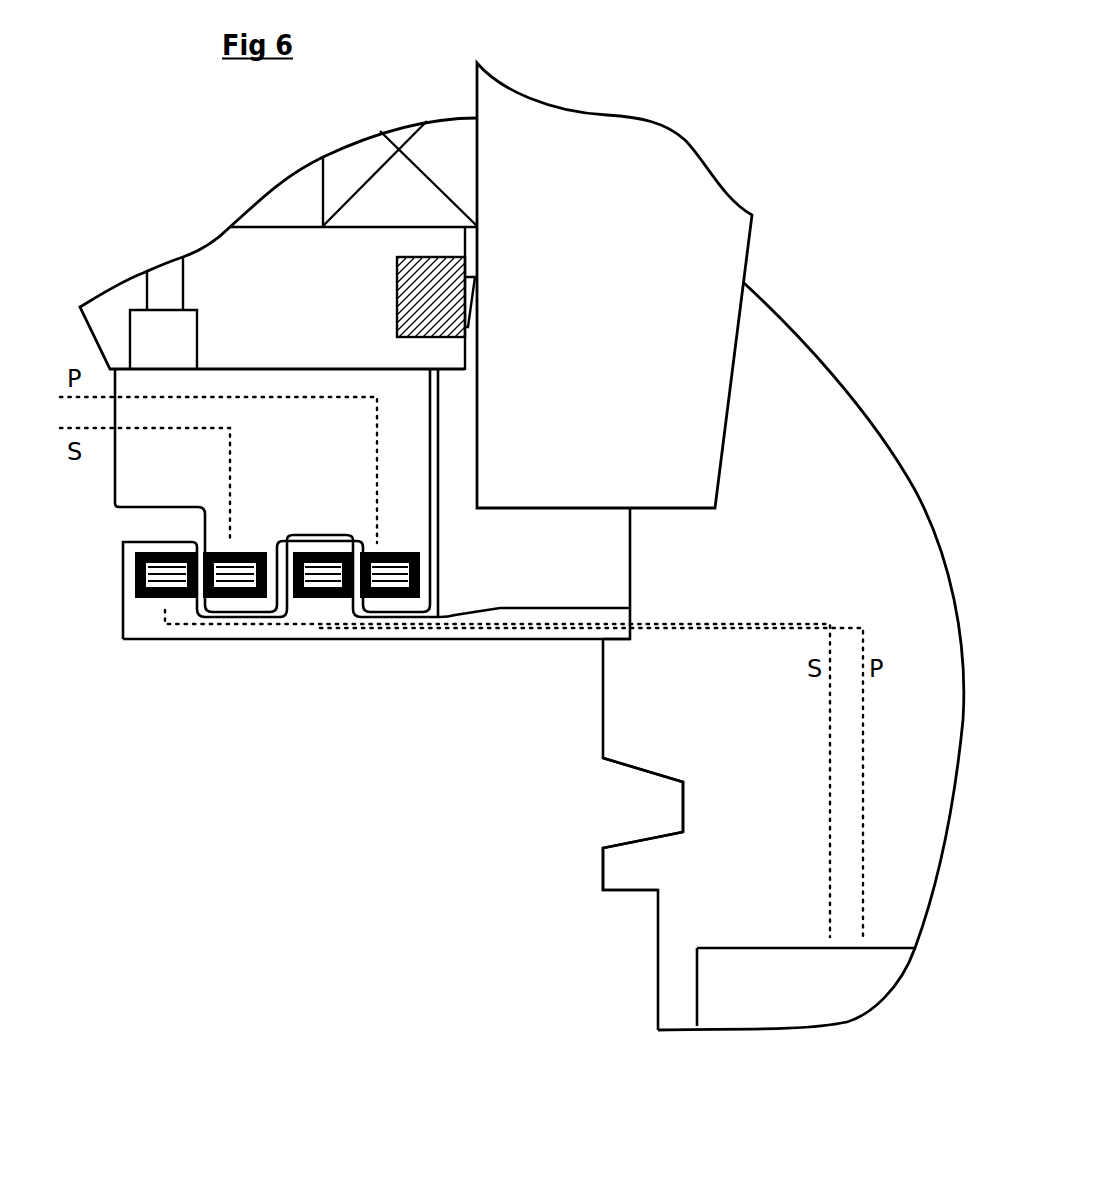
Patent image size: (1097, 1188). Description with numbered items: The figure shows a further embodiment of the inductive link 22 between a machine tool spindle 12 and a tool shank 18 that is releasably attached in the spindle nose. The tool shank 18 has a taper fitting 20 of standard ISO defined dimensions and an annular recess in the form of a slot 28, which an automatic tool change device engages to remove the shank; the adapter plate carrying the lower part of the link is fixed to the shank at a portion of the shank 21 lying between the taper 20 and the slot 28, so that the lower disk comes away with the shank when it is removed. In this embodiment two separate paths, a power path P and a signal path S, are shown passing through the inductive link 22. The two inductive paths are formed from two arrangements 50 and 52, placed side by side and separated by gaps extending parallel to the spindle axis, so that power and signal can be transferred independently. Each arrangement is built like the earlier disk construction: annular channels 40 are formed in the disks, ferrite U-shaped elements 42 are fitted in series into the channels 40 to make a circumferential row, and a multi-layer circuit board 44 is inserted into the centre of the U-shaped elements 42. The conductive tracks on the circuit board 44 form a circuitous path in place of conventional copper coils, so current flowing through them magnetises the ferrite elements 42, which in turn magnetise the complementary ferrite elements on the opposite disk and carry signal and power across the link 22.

The spindle 12 is at (607, 344).
The taper fitting 20 is at (882, 566).
The tool shank 18 is at (585, 967).
The portion of the shank 21 is at (620, 730).
The slot 28 is at (645, 808).
The inductive link 22 is at (119, 664).
The arrangement 52 is at (138, 497).
The arrangement 50 is at (132, 615).
The annular channel 40 is at (294, 681).
The ferrite U-shaped element 42 is at (177, 598).
The multi-layer circuit board 44 is at (147, 598).